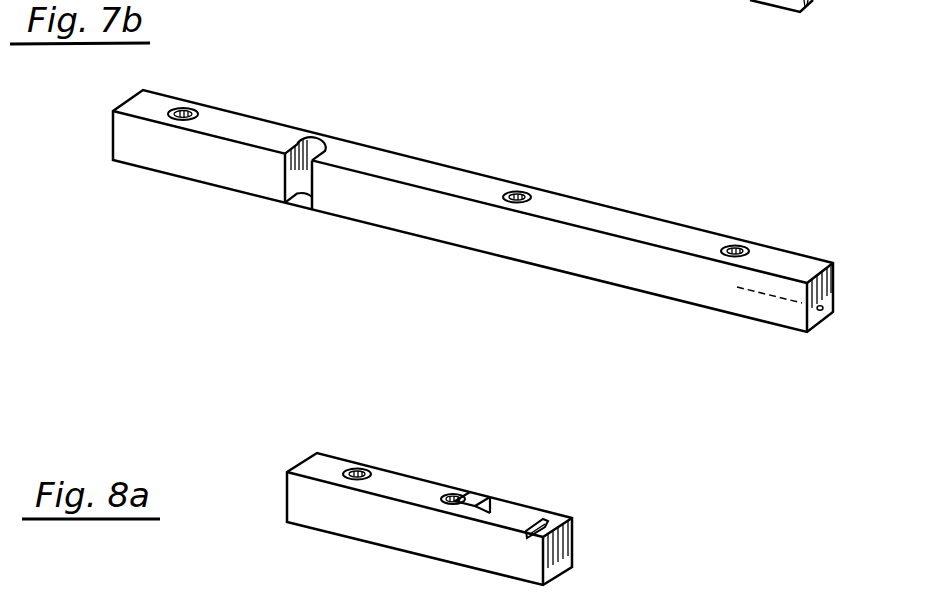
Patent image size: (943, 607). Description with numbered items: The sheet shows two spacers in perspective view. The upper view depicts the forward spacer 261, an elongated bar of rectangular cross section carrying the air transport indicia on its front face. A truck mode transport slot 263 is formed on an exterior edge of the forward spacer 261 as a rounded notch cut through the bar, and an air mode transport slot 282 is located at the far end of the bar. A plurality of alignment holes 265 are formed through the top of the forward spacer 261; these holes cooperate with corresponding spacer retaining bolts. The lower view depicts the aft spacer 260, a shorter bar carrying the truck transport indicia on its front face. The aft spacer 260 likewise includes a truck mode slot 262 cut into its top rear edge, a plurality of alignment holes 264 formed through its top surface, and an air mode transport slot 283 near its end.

In FIG. 7b, the forward spacer 261 is at (415, 170).
In FIG. 7b, the truck mode transport slot 263 is at (303, 200).
In FIG. 7b, the alignment holes 265 is at (190, 107).
In FIG. 7b, the air mode transport slot 282 is at (822, 313).
In FIG. 8a, the aft spacer 260 is at (407, 492).
In FIG. 8a, the alignment holes 264 is at (363, 470).
In FIG. 8a, the truck mode slot 262 is at (500, 506).
In FIG. 8a, the air mode transport slot 283 is at (543, 518).